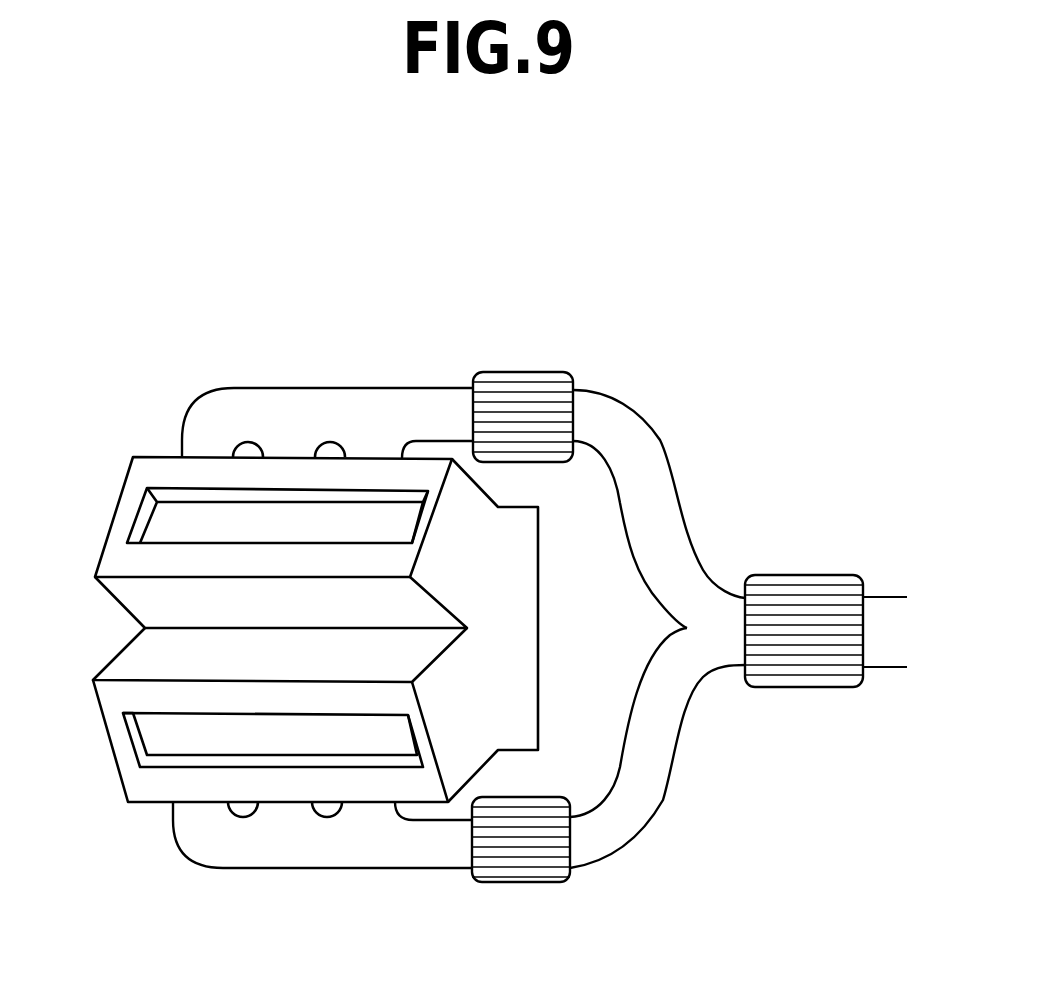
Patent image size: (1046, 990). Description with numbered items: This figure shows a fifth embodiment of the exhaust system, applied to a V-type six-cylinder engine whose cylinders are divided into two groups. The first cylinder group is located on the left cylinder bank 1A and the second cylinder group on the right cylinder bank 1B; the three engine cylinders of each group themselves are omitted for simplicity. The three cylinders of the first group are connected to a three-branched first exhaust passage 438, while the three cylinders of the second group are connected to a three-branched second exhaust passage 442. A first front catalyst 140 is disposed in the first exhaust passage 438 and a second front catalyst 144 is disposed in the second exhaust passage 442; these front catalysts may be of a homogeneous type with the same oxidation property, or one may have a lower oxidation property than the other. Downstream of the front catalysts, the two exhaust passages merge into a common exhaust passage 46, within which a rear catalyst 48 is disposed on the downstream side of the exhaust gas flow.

The left cylinder bank 1A is at (137, 778).
The right cylinder bank 1B is at (135, 480).
The second exhaust passage 442 is at (287, 387).
The first exhaust passage 438 is at (308, 845).
The second front catalyst 144 is at (537, 385).
The first front catalyst 140 is at (532, 877).
The common exhaust passage 46 is at (710, 605).
The rear catalyst 48 is at (822, 575).